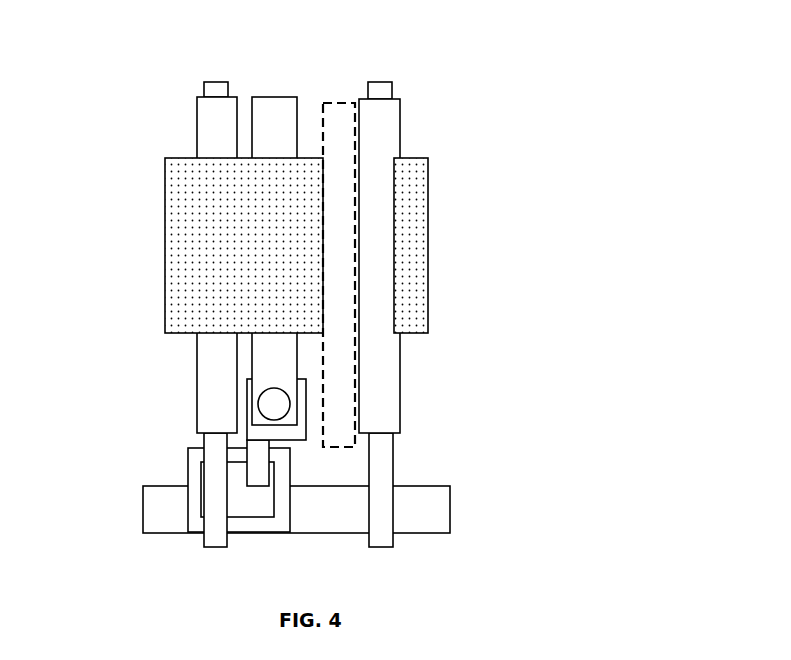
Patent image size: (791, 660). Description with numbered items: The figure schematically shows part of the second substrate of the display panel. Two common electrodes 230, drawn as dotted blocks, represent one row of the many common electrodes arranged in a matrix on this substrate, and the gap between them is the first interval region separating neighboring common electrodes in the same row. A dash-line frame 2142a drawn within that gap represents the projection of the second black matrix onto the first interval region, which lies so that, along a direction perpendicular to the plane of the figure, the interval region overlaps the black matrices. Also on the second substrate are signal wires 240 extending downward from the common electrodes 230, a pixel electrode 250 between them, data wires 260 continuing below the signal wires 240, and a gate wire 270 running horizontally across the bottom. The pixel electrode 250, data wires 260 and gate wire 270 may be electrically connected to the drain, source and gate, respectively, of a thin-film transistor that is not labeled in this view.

The common electrode 230 is at (184, 183).
The signal wire 240 is at (208, 360).
The pixel electrode 250 is at (261, 117).
The data wire 260 is at (217, 441).
The gate wire 270 is at (439, 509).
The dash-line frame 2142a is at (336, 103).